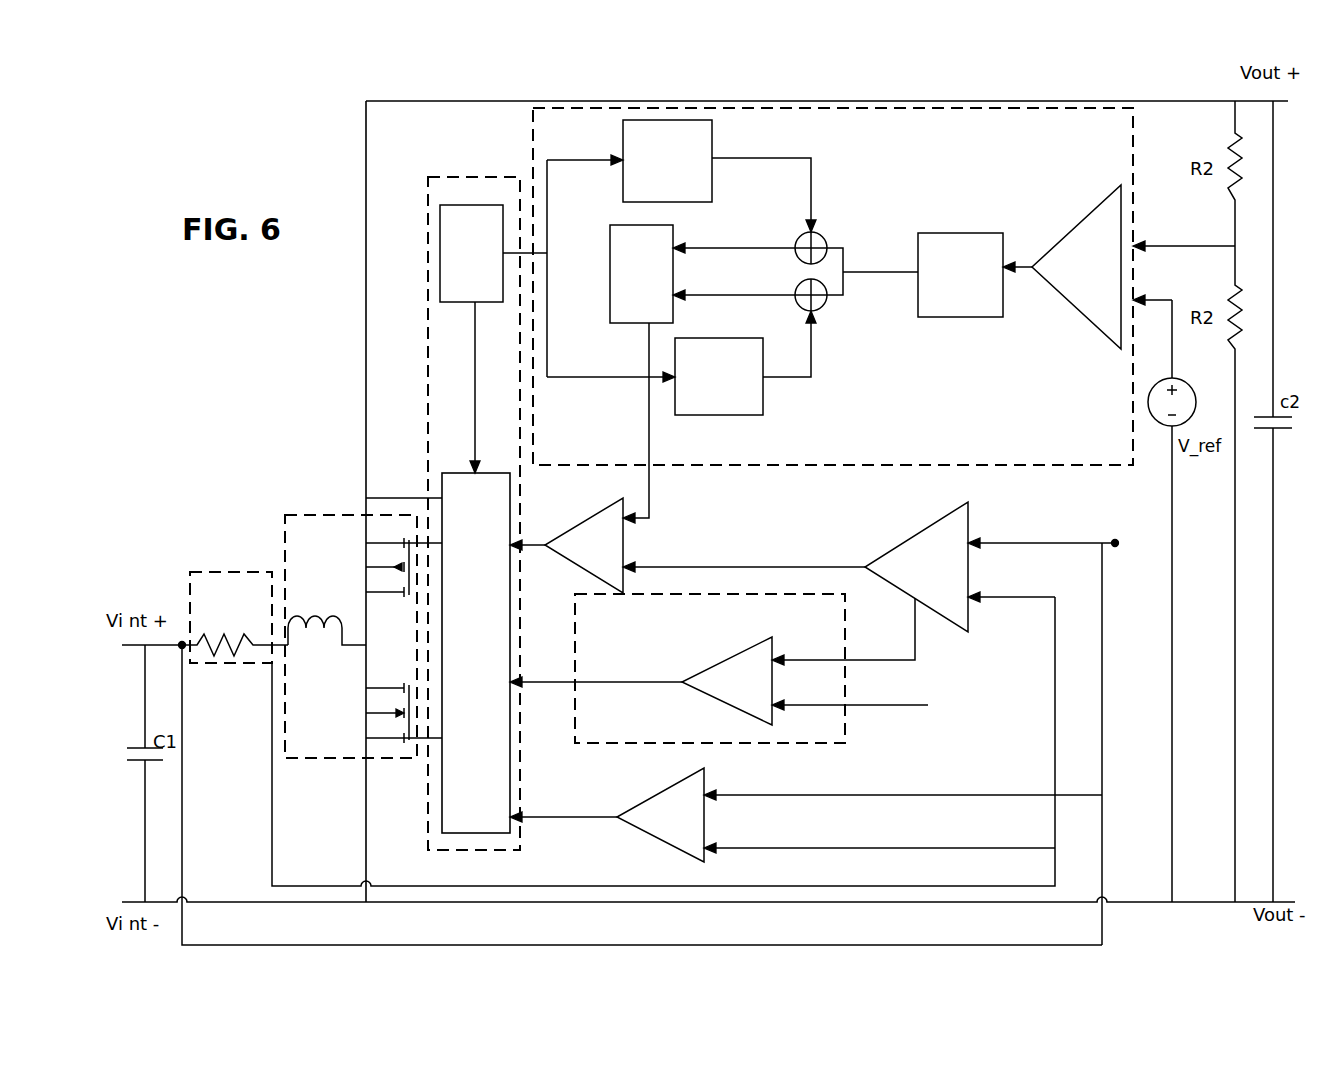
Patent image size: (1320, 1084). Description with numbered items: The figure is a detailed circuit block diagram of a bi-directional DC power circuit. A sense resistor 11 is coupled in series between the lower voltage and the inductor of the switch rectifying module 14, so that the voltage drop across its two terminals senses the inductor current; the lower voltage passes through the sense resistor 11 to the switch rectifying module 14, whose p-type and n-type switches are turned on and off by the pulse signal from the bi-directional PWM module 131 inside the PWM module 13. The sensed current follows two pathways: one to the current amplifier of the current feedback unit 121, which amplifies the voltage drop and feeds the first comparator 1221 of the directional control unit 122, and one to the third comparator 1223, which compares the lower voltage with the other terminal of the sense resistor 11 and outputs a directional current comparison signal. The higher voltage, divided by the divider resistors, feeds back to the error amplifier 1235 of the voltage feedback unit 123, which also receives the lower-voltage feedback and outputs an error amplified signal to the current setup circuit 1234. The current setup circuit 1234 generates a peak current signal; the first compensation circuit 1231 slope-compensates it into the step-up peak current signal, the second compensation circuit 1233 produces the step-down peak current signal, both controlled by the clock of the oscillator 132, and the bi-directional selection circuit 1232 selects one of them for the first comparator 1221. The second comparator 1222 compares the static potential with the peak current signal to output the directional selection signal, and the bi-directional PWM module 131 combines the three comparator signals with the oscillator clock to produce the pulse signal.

The sense resistor 11 is at (237, 572).
The PWM module 13 is at (470, 177).
The switch rectifying module 14 is at (362, 515).
The current feedback unit 121 is at (1060, 532).
The directional control unit 122 is at (833, 712).
The voltage feedback unit 123 is at (945, 104).
The bi-directional PWM module 131 is at (445, 818).
The oscillator 132 is at (440, 248).
The first comparator 1221 is at (625, 545).
The second comparator 1222 is at (682, 682).
The third comparator 1223 is at (656, 795).
The first compensation circuit 1231 is at (714, 158).
The bi-directional selection circuit 1232 is at (610, 270).
The second compensation circuit 1233 is at (722, 415).
The current setup circuit 1234 is at (942, 228).
The error amplifier 1235 is at (1089, 327).